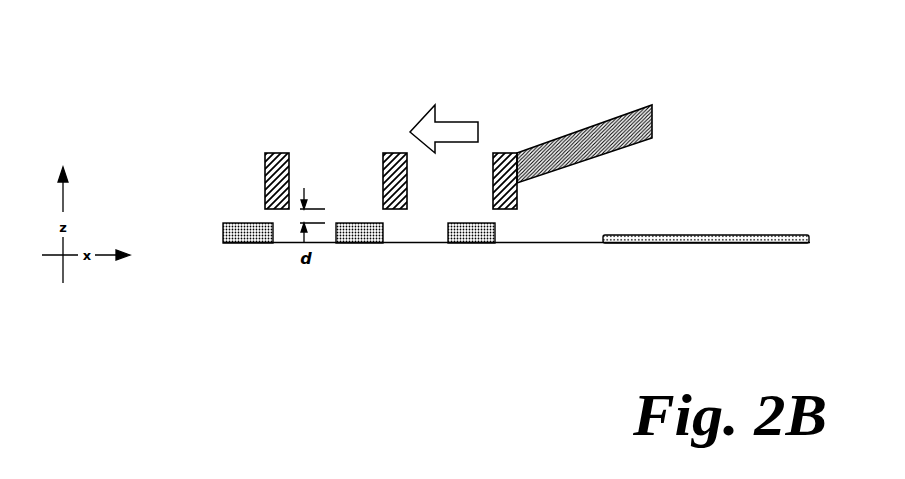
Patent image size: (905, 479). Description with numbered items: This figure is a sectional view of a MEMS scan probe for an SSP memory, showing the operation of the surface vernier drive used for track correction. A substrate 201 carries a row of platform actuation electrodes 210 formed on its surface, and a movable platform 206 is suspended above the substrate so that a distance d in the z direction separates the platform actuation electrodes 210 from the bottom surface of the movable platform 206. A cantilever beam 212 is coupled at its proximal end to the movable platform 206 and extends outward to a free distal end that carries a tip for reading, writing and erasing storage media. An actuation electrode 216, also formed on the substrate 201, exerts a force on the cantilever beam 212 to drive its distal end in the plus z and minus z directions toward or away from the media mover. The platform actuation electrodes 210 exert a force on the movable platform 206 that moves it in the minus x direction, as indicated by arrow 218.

The substrate 201 is at (510, 244).
The movable platform 206 is at (279, 160).
The platform actuation electrodes 210 is at (260, 233).
The cantilever beam 212 is at (587, 145).
The actuation electrode 216 is at (712, 244).
The arrow 218 is at (444, 129).